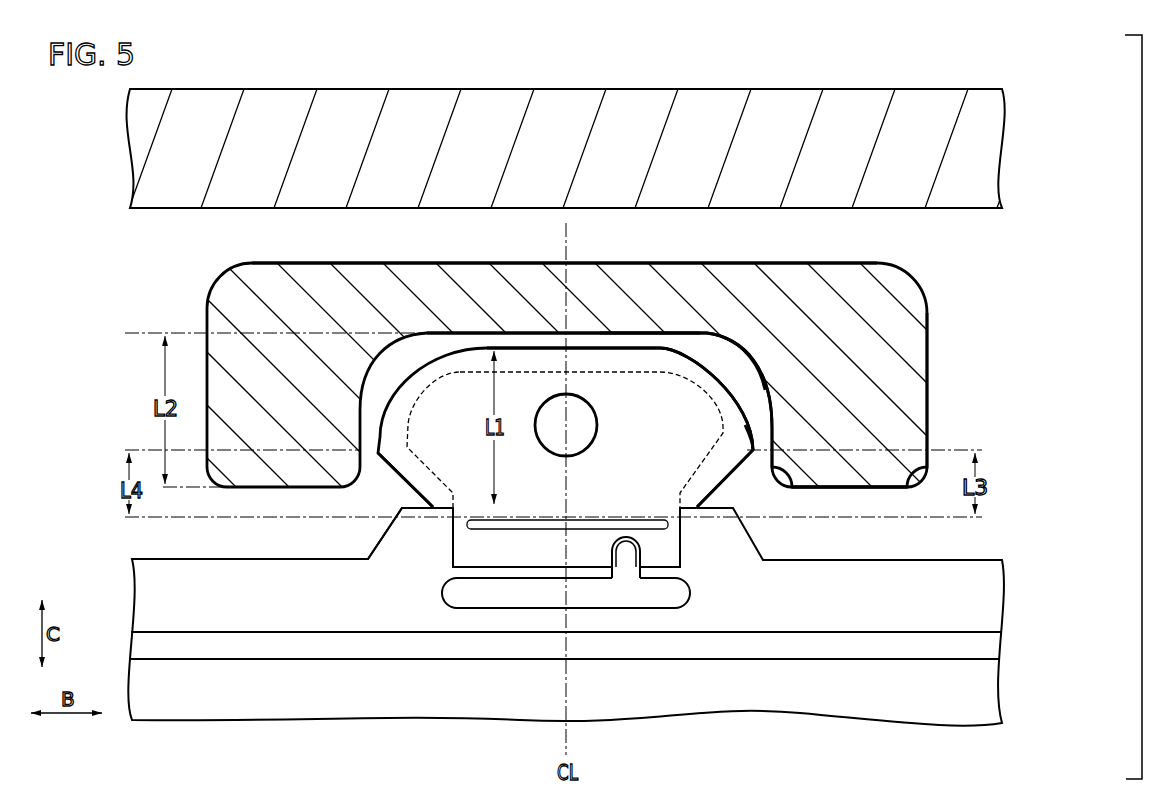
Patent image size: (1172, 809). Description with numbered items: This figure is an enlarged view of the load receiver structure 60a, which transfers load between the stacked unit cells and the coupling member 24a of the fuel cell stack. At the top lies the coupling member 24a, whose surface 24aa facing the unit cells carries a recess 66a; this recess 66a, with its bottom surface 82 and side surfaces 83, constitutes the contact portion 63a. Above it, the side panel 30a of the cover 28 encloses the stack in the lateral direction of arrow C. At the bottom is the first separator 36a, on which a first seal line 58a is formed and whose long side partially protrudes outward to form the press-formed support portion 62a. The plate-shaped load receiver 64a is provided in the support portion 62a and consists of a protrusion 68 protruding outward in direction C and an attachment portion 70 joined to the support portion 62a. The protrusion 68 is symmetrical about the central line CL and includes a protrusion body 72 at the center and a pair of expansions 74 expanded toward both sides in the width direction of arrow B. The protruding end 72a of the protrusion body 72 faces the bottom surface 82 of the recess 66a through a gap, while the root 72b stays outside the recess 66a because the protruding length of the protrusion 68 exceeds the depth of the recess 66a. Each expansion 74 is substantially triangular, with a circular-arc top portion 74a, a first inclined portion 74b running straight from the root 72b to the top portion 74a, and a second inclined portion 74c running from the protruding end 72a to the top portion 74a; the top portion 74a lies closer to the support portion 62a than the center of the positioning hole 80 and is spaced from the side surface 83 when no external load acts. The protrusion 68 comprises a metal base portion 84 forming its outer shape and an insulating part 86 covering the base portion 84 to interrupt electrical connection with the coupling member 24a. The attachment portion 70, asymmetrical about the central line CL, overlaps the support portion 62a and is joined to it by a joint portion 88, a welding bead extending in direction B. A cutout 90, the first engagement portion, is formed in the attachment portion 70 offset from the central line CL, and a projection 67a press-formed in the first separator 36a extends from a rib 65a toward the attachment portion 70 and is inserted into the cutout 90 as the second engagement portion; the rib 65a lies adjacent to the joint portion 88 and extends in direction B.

The cover 28 is at (797, 84).
The side panel 30a is at (918, 100).
The load receiver structure 60a is at (950, 264).
The expansion 74 is at (425, 337).
The contact portion 63a is at (757, 350).
The coupling member 24a is at (928, 312).
The surface of the coupling member 24aa is at (822, 489).
The second inclined portion 74c is at (733, 410).
The recess 66a is at (742, 388).
The protrusion body 72 is at (622, 358).
The protruding end 72a is at (589, 345).
The bottom surface 82 is at (642, 334).
The root 72b is at (688, 512).
The first inclined portion 74b is at (722, 490).
The top portion 74a is at (753, 452).
The load receiver 64a is at (757, 430).
The protrusion 68 is at (475, 213).
The insulating part 86 is at (552, 347).
The base portion 84 is at (535, 373).
The side surface 83 is at (405, 438).
The positioning hole 80 is at (596, 431).
The attachment portion 70 is at (598, 517).
The joint portion 88 is at (528, 523).
The cutout 90 is at (630, 543).
The first separator 36a is at (994, 597).
The first seal line 58a is at (991, 644).
The support portion 62a is at (397, 550).
The projection 67a is at (610, 551).
The rib 65a is at (645, 588).